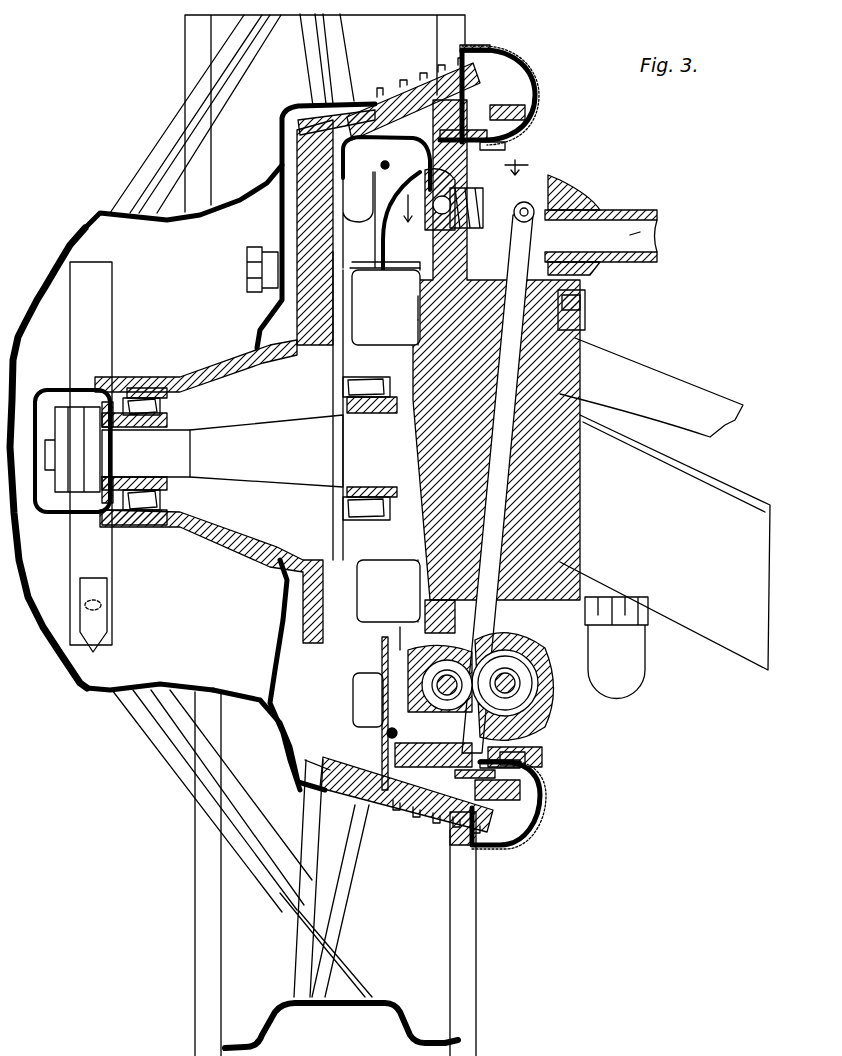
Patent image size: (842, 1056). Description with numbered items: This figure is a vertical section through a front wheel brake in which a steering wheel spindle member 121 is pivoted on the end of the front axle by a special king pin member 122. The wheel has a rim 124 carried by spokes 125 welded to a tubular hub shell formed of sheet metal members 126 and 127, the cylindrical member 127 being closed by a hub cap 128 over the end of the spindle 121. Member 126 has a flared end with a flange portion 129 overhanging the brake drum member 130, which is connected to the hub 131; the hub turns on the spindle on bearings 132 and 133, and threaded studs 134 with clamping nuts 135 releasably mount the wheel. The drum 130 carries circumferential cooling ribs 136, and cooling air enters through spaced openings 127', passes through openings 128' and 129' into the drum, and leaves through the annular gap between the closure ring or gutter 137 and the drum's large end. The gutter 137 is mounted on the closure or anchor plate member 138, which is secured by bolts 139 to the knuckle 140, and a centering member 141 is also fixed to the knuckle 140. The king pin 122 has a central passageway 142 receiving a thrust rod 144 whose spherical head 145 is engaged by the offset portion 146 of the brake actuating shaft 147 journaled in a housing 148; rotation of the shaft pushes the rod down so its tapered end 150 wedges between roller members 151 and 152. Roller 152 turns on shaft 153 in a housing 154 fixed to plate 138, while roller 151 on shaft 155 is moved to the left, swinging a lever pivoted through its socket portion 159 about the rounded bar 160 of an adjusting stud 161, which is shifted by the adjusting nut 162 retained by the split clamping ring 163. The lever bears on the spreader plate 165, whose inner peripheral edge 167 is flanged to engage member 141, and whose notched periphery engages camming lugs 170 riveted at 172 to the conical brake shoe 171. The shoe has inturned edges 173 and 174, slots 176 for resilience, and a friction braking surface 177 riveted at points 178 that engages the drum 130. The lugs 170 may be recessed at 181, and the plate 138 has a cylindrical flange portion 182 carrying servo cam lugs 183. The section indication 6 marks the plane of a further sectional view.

The section line 6 is at (468, 187).
The steering wheel spindle member 121 is at (255, 425).
The king pin member 122 is at (595, 390).
The rim 124 is at (285, 1046).
The spokes 125 is at (312, 960).
The sheet metal member 126 is at (296, 774).
The cylindrical hub member 127 is at (145, 710).
The spaced openings 127' is at (230, 226).
The hub cap 128 is at (48, 455).
The openings 128' is at (253, 582).
The flange portion 129 is at (361, 801).
The openings 129' is at (264, 675).
The brake drum member 130 is at (313, 790).
The hub 131 is at (235, 540).
The bearing 132 is at (145, 527).
The bearing 133 is at (367, 495).
The threaded studs 134 is at (262, 292).
The clamping nuts 135 is at (247, 262).
The cooling ribs 136 is at (452, 830).
The closure ring or gutter 137 is at (538, 100).
The closure or anchor plate member 138 is at (418, 296).
The bolts 139 is at (418, 334).
The knuckle 140 is at (418, 310).
The centering or guiding member 141 is at (360, 270).
The passageway 142 is at (580, 472).
The thrust rod 144 is at (585, 330).
The spherical head 145 is at (601, 236).
The offset portion 146 is at (575, 188).
The brake actuating shaft member 147 is at (635, 230).
The housing 148 is at (580, 272).
The tapered end 150 is at (535, 625).
The roller member 151 is at (468, 747).
The roller member 152 is at (530, 702).
The shaft 153 is at (546, 678).
The housing 154 is at (525, 755).
The shaft 155 is at (462, 708).
The socket portion 159 is at (448, 220).
The rounded bar member 160 is at (434, 199).
The adjusting stud 161 is at (532, 178).
The adjusting nut 162 is at (545, 160).
The split clamping ring 163 is at (508, 148).
The spreader plate 165 is at (382, 660).
The inner peripheral edge 167 is at (399, 397).
The camming lugs 170 is at (415, 85).
The conical brake shoe 171 is at (515, 75).
The rivets 172 is at (382, 112).
The inturned edge portion 173 is at (370, 700).
The inturned edge portion 174 is at (520, 792).
The slots 176 is at (362, 222).
The friction braking surface 177 is at (328, 108).
The rivet points 178 is at (374, 156).
The recess 181 is at (520, 105).
The cylindrical flange portion 182 is at (520, 765).
The servo cam lugs 183 is at (505, 132).